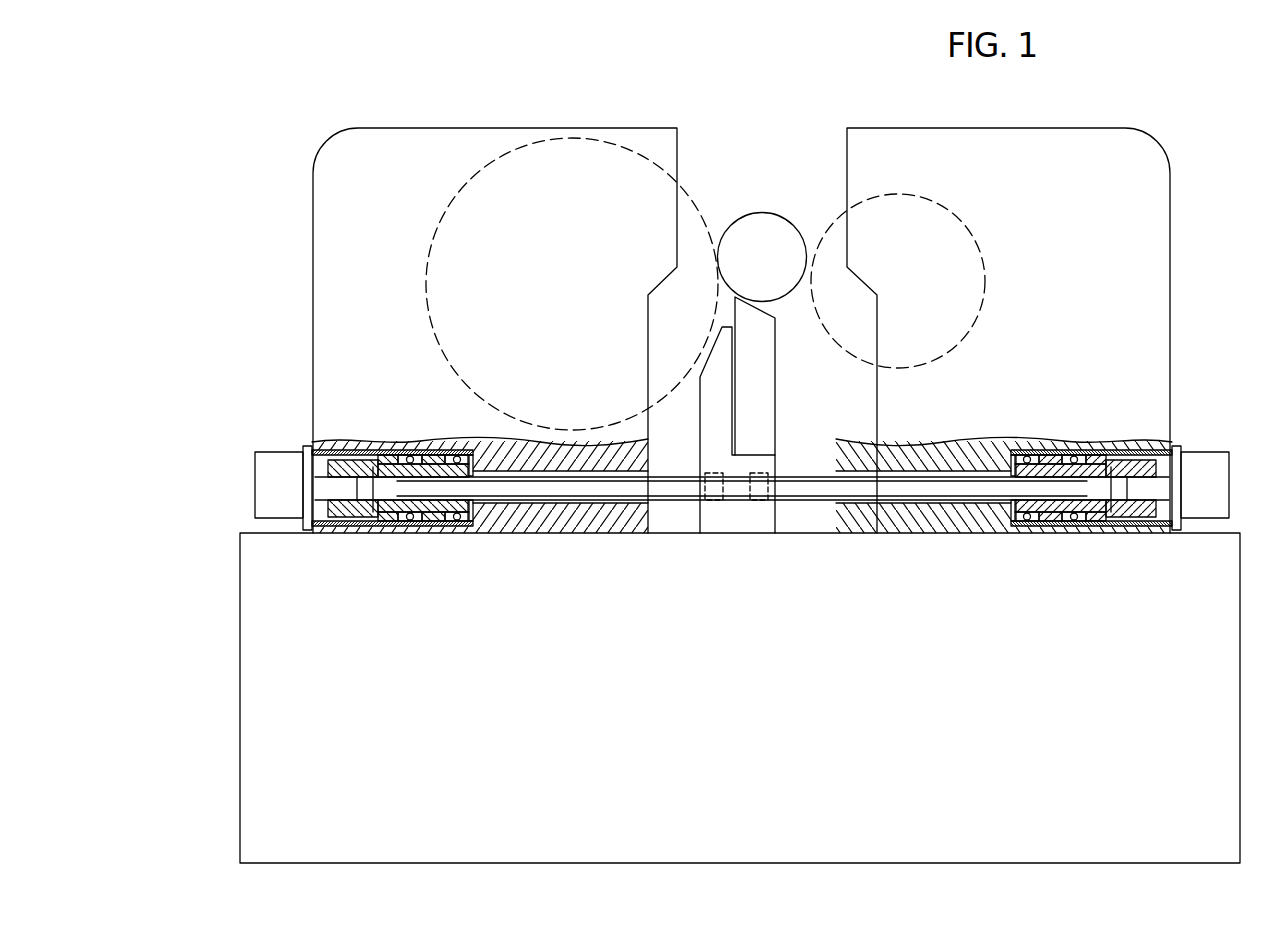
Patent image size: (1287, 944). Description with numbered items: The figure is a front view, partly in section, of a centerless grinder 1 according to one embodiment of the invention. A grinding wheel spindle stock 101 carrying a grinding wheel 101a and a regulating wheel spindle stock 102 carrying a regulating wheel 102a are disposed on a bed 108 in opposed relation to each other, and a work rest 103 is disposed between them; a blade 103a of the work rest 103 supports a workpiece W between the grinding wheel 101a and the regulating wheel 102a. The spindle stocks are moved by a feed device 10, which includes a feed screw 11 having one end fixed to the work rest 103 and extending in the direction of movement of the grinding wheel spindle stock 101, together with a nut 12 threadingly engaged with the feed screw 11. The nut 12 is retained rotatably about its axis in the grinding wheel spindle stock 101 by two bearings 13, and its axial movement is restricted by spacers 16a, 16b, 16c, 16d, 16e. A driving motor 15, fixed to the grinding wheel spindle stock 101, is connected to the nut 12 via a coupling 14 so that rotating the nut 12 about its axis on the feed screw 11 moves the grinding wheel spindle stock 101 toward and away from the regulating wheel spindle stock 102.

The centerless grinder 1 is at (548, 73).
The feed device 10 is at (738, 516).
The feed screw 11 is at (595, 505).
The nut 12 is at (442, 462).
The bearing 13 is at (410, 523).
The coupling 14 is at (360, 528).
The driving motor 15 is at (264, 452).
The spacer 16a is at (356, 450).
The spacer 16b is at (397, 455).
The spacer 16c is at (437, 527).
The spacer 16d is at (425, 455).
The spacer 16e is at (471, 451).
The grinding wheel spindle stock 101 is at (313, 253).
The grinding wheel 101a is at (693, 197).
The regulating wheel spindle stock 102 is at (1163, 218).
The regulating wheel 102a is at (828, 341).
The work rest 103 is at (731, 541).
The blade 103a is at (772, 412).
The bed 108 is at (812, 698).
The workpiece W is at (773, 216).